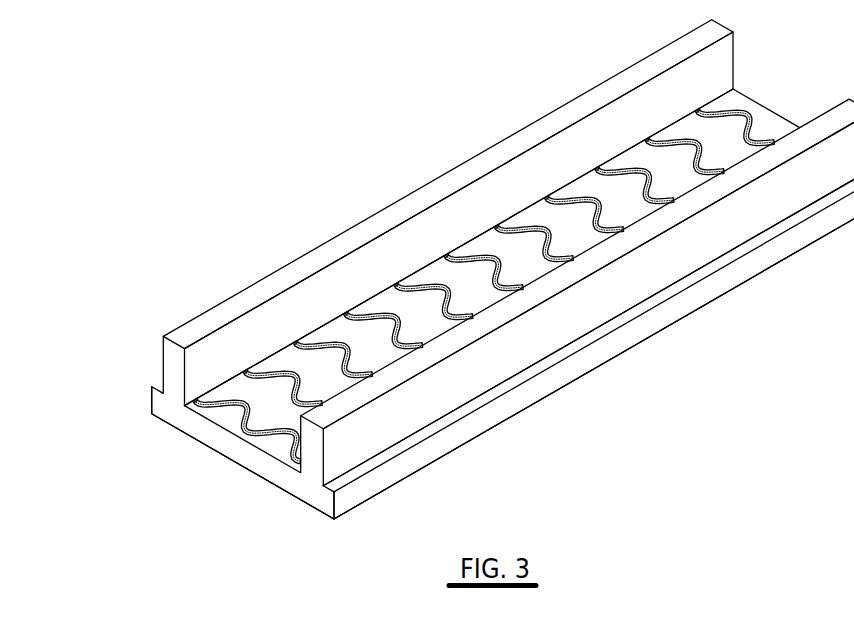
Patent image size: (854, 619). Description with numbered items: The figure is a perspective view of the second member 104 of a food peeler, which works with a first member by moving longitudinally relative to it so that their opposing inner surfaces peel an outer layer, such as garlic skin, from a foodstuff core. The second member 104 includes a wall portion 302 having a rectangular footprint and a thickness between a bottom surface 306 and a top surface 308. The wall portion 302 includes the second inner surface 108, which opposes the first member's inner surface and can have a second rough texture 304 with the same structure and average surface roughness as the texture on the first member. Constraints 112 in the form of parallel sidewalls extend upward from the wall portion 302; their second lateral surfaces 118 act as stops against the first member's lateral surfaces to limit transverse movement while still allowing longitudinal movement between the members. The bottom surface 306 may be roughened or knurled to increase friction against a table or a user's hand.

The second member 104 is at (337, 222).
The second inner surface 108 is at (257, 405).
The constraint 112 is at (173, 358).
The second lateral surface 118 is at (292, 310).
The wall portion 302 is at (212, 430).
The second rough texture 304 is at (583, 208).
The bottom surface 306 is at (305, 505).
The top surface 308 is at (446, 420).